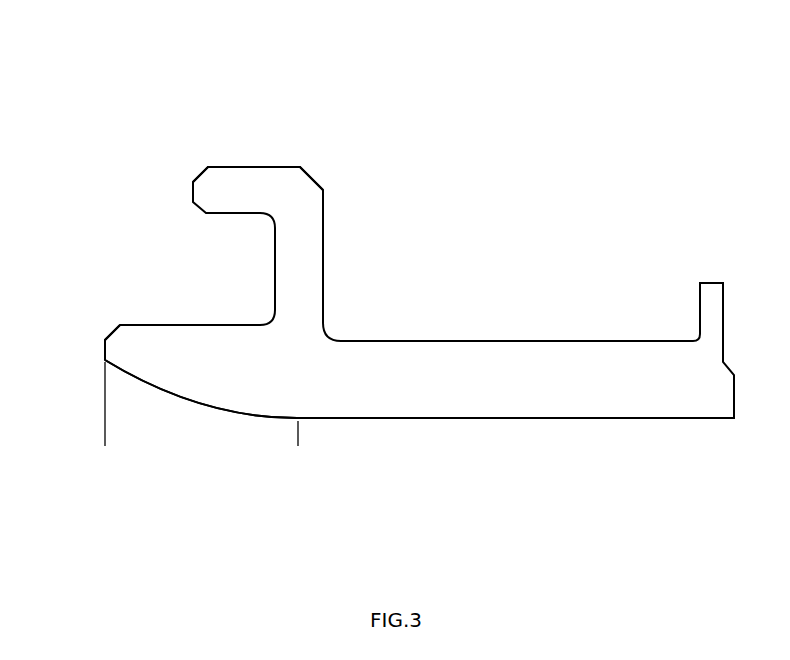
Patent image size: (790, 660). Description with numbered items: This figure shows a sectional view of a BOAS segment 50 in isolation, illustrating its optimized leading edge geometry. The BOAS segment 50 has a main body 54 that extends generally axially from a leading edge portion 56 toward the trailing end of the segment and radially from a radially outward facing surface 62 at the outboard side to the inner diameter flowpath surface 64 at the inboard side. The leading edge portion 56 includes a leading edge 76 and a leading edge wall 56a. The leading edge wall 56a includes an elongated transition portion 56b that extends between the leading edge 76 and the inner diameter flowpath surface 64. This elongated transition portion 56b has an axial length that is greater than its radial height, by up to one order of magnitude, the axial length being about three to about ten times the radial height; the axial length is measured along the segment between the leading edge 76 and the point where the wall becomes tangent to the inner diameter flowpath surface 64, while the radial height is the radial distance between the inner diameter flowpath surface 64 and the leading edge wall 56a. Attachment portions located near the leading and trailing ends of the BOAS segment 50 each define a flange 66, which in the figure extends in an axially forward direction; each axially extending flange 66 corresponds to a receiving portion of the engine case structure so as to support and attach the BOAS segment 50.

The BOAS segment 50 is at (600, 118).
The main body 54 is at (501, 390).
The leading edge portion 56 is at (105, 360).
The leading edge wall 56a is at (145, 385).
The elongated transition portion 56b is at (298, 438).
The radially outward facing surface 62 is at (470, 341).
The inner diameter flowpath surface 64 is at (625, 420).
The flange 66 is at (218, 195).
The leading edge 76 is at (105, 352).